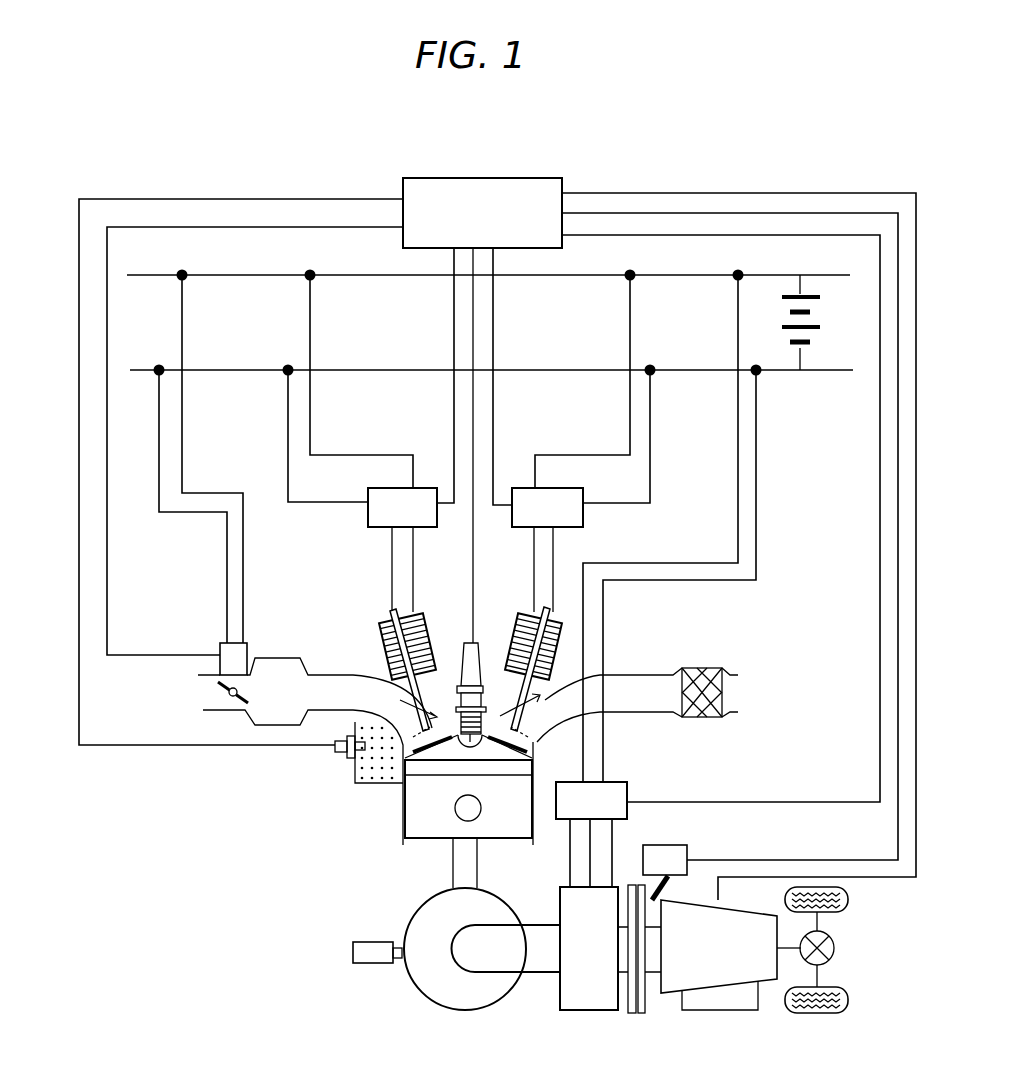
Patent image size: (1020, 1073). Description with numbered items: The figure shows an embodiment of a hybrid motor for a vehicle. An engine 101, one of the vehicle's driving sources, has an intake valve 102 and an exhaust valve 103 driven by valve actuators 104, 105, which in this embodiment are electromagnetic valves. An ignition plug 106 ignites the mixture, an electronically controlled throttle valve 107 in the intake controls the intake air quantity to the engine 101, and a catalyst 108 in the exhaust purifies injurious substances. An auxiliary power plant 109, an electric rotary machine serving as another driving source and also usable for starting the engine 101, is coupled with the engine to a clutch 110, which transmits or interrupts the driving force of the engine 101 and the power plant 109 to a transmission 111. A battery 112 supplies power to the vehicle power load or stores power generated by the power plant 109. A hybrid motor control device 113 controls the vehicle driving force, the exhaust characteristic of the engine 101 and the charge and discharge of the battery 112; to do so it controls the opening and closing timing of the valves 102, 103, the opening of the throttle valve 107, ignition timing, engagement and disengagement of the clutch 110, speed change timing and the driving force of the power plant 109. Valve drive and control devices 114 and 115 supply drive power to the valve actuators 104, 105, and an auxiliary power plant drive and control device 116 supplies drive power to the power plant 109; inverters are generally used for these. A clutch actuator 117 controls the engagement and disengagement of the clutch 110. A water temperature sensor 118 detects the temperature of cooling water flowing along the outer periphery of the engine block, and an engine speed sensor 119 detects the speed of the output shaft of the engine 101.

The engine 101 is at (395, 820).
The intake valve 102 is at (395, 612).
The exhaust valve 103 is at (545, 607).
The valve actuator 104 is at (383, 650).
The valve actuator 105 is at (562, 648).
The ignition plug 106 is at (477, 640).
The electronically controlled throttle valve 107 is at (228, 650).
The catalyst 108 is at (703, 718).
The auxiliary power plant 109 is at (575, 1011).
The clutch 110 is at (645, 1006).
The transmission 111 is at (718, 991).
The battery 112 is at (800, 355).
The hybrid motor control device 113 is at (443, 198).
The valve drive and control device 114 is at (369, 497).
The valve drive and control device 115 is at (583, 499).
The auxiliary power plant drive and control device 116 is at (627, 790).
The clutch actuator 117 is at (665, 845).
The water temperature sensor 118 is at (346, 759).
The engine speed sensor 119 is at (370, 963).